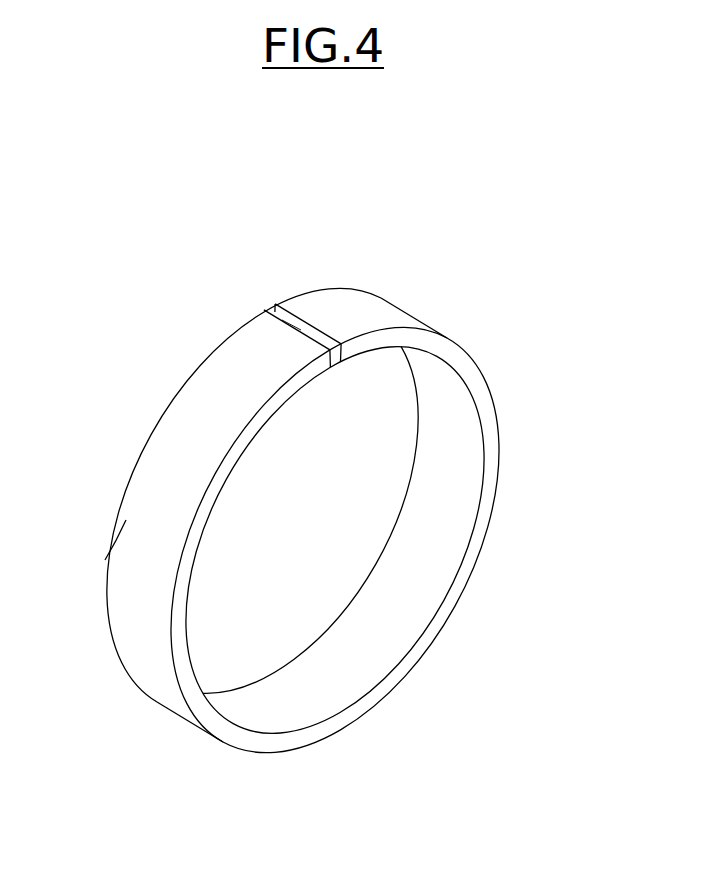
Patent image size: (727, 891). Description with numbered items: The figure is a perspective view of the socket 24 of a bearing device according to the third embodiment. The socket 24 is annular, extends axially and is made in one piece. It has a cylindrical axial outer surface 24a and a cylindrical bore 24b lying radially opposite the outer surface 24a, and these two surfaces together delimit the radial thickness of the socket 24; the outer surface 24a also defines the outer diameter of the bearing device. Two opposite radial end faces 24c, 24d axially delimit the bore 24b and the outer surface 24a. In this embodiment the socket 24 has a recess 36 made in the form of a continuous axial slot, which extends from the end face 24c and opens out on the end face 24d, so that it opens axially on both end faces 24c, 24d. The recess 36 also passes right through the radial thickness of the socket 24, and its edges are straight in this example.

The socket 24 is at (134, 330).
The cylindrical axial outer surface 24a is at (361, 297).
The cylindrical bore 24b is at (453, 456).
The radial end face 24c is at (109, 527).
The radial end face 24d is at (378, 692).
The recess 36 is at (277, 303).